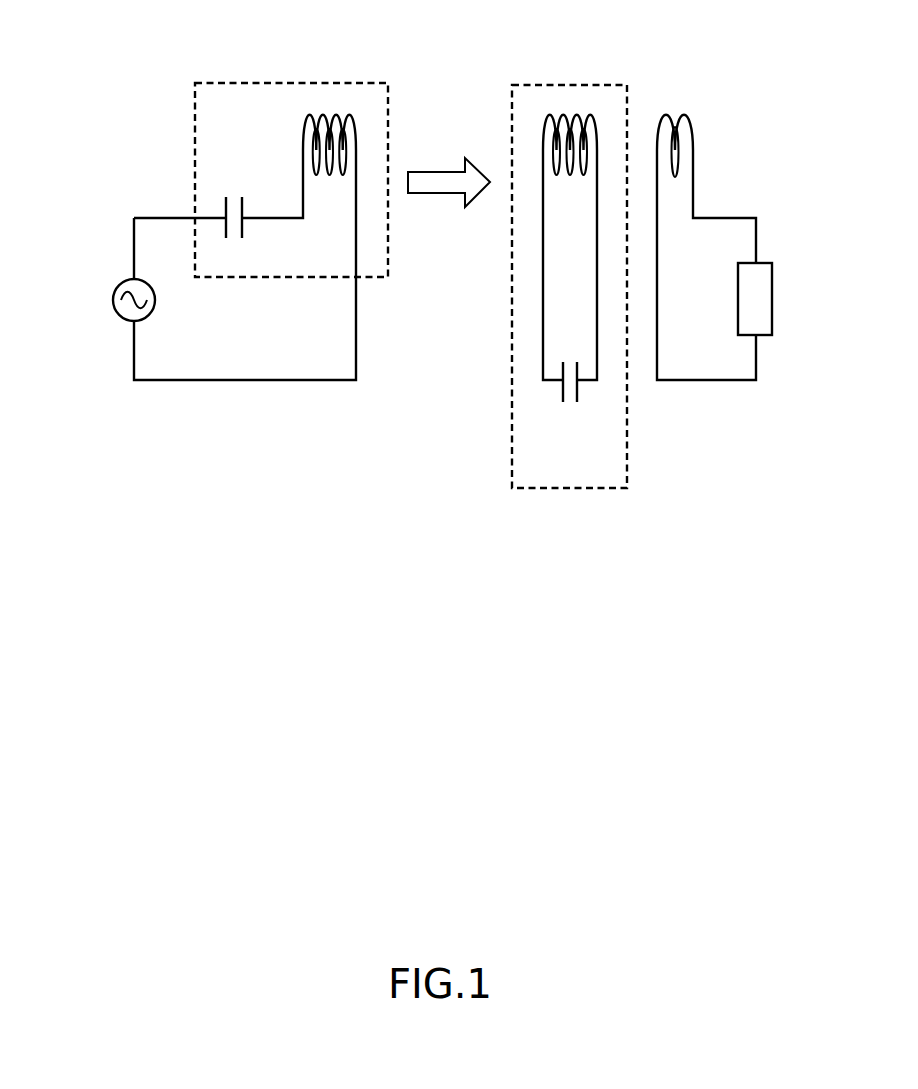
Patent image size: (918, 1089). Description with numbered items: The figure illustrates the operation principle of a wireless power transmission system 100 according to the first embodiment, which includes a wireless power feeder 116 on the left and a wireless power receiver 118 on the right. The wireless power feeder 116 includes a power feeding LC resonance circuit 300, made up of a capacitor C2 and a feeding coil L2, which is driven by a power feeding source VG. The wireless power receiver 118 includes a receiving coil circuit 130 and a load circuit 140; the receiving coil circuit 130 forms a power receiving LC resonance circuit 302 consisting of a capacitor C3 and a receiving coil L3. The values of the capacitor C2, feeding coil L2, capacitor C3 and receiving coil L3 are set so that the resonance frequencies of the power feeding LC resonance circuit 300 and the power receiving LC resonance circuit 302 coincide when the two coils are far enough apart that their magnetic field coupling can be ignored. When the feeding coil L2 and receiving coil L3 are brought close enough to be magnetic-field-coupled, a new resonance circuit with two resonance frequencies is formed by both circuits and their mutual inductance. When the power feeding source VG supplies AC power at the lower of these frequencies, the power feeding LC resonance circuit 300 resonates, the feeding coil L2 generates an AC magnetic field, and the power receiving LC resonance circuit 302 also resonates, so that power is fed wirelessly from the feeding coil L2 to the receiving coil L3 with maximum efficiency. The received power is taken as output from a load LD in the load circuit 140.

The wireless power transmission system 100 is at (415, 633).
The wireless power feeder 116 is at (107, 402).
The wireless power receiver 118 is at (505, 497).
The receiving coil circuit 130 is at (604, 402).
The load circuit 140 is at (778, 402).
The power feeding LC resonance circuit 300 is at (292, 83).
The power receiving LC resonance circuit 302 is at (569, 84).
The capacitor C2 is at (232, 202).
The feeding coil L2 is at (329, 164).
The receiving coil L3 is at (570, 163).
The capacitor C3 is at (567, 366).
The power feeding source VG is at (111, 300).
The load LD is at (775, 299).